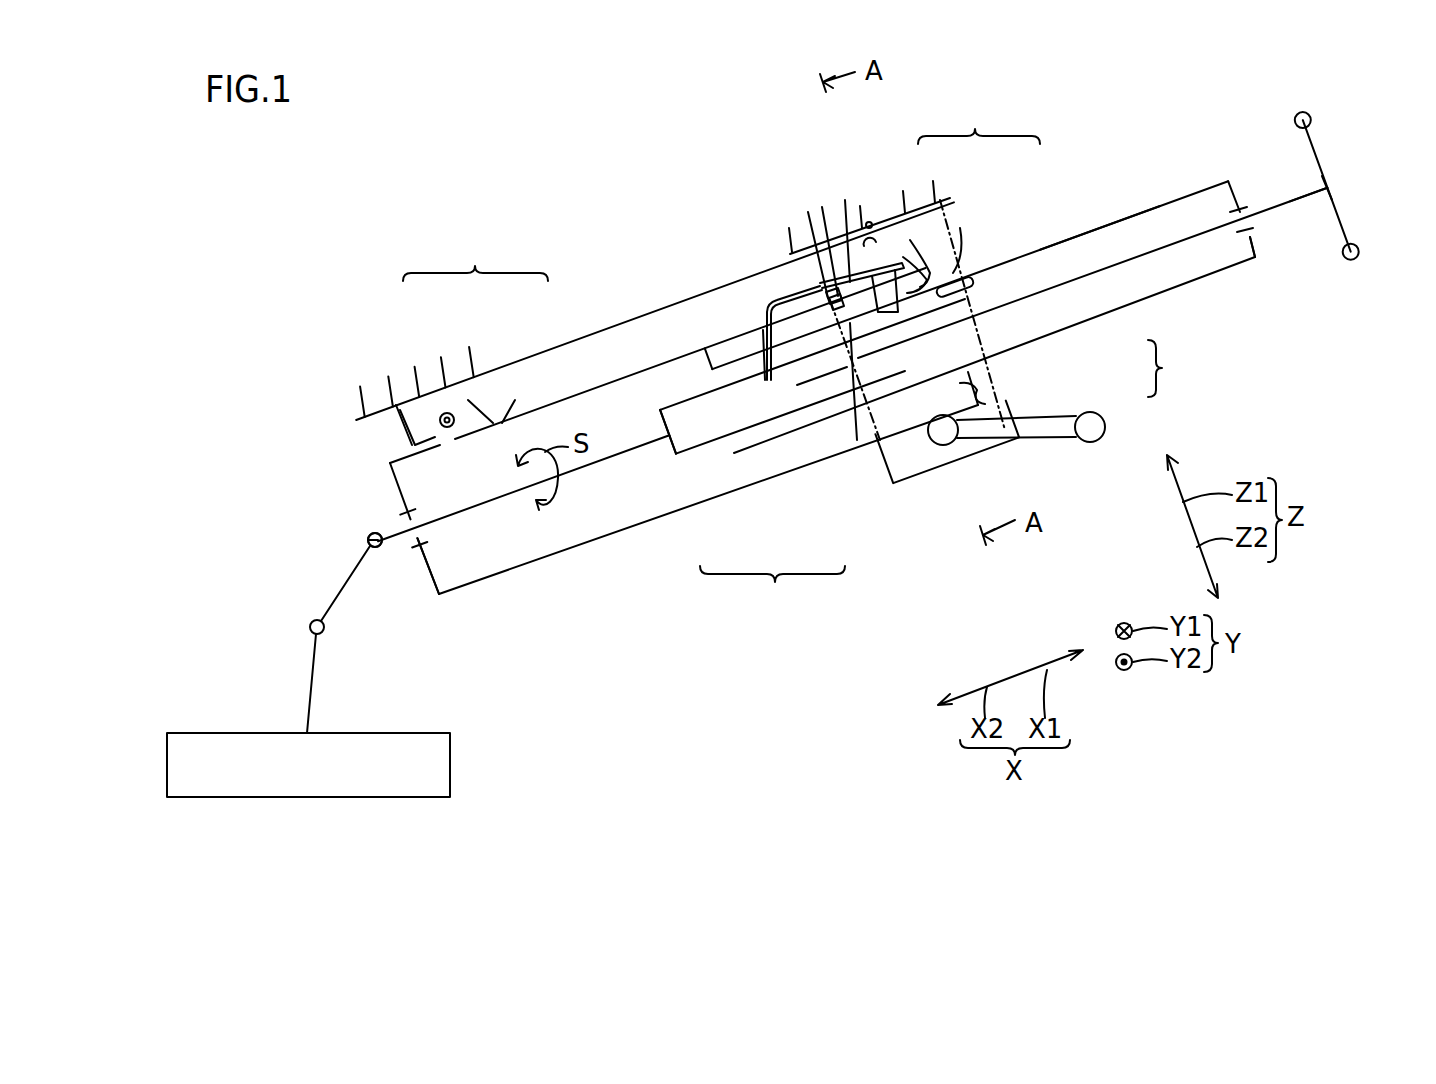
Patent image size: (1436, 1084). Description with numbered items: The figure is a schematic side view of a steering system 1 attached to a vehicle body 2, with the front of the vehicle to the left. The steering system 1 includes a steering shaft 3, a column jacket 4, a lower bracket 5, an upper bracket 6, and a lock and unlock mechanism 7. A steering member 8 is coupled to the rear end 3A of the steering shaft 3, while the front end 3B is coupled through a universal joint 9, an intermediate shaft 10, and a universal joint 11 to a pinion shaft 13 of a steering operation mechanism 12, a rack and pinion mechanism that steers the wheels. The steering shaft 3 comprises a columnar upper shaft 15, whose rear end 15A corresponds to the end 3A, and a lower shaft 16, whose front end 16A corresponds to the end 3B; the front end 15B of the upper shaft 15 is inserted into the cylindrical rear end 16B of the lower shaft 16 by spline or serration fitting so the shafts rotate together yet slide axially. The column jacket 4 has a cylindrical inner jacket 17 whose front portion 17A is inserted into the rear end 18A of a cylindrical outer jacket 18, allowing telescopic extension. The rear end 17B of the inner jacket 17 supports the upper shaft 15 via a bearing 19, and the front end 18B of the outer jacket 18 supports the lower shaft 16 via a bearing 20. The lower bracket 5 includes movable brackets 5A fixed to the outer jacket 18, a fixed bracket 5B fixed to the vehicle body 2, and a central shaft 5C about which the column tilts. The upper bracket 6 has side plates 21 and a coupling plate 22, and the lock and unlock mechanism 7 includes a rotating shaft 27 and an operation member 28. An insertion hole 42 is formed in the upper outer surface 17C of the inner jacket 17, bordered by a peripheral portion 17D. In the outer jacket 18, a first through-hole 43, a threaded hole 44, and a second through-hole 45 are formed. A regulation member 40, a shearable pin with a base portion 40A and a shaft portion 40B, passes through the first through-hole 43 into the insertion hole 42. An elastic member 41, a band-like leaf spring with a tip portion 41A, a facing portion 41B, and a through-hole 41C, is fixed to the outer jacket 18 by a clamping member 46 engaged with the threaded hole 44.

The steering system 1 is at (1081, 116).
The vehicle body 2 is at (380, 403).
The steering shaft 3 is at (772, 587).
The end of the steering shaft 3A is at (1323, 212).
The other end of the steering shaft 3B is at (378, 533).
The column jacket 4 is at (1169, 368).
The lower bracket 5 is at (475, 260).
The movable bracket 5A is at (493, 420).
The fixed bracket 5B is at (428, 400).
The central shaft 5C is at (455, 387).
The upper bracket 6 is at (952, 270).
The lock and unlock mechanism 7 is at (932, 450).
The steering member 8 is at (1318, 163).
The universal joint 9 is at (367, 540).
The intermediate shaft 10 is at (346, 581).
The universal joint 11 is at (310, 627).
The steering operation mechanism 12 is at (450, 767).
The pinion shaft 13 is at (310, 687).
The upper shaft 15 is at (845, 402).
The rear end of the upper shaft 15A is at (1308, 195).
The front end of the upper shaft 15B is at (802, 410).
The lower shaft 16 is at (637, 447).
The front end of the lower shaft 16A is at (349, 495).
The rear end of the lower shaft 16B is at (663, 397).
The inner jacket 17 is at (1130, 307).
The front portion of the inner jacket 17A is at (700, 352).
The rear end of the inner jacket 17B is at (1257, 247).
The upper outer surface of the inner jacket 17C is at (1107, 225).
The peripheral portion 17D is at (974, 287).
The outer jacket 18 is at (1020, 410).
The rear end of the outer jacket 18A is at (968, 388).
The front end of the outer jacket 18B is at (417, 567).
The bearing 19 is at (1238, 207).
The bearing 20 is at (413, 540).
The side plates 21 is at (975, 447).
The coupling plate 22 is at (870, 223).
The rotating shaft 27 is at (943, 442).
The operation member 28 is at (1055, 430).
The regulation member 40 is at (979, 118).
The base portion 40A is at (927, 220).
The shaft portion 40B is at (950, 262).
The elastic member 41 is at (770, 338).
The tip portion 41A is at (805, 378).
The facing portion 41B is at (893, 257).
The through-hole 41C is at (827, 297).
The insertion hole 42 is at (854, 403).
The first through-hole 43 is at (892, 300).
The threaded hole 44 is at (813, 253).
The second through-hole 45 is at (768, 306).
The clamping member 46 is at (833, 273).